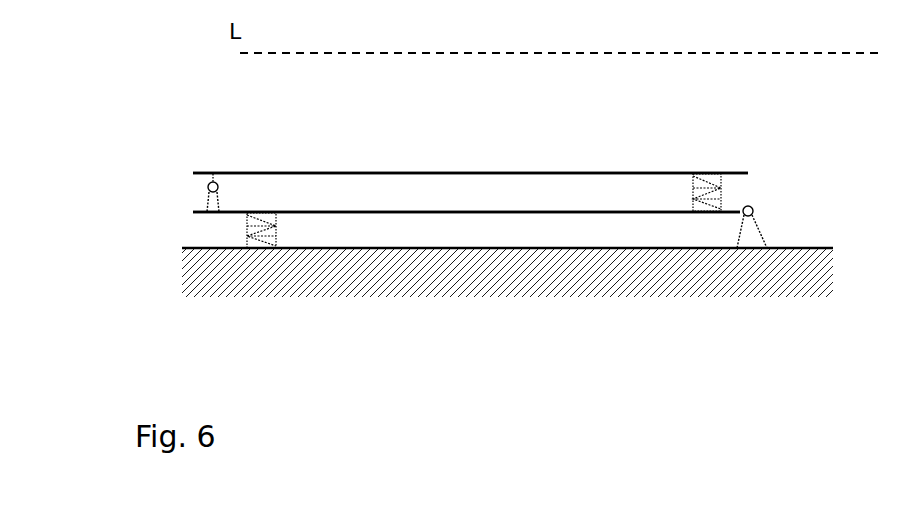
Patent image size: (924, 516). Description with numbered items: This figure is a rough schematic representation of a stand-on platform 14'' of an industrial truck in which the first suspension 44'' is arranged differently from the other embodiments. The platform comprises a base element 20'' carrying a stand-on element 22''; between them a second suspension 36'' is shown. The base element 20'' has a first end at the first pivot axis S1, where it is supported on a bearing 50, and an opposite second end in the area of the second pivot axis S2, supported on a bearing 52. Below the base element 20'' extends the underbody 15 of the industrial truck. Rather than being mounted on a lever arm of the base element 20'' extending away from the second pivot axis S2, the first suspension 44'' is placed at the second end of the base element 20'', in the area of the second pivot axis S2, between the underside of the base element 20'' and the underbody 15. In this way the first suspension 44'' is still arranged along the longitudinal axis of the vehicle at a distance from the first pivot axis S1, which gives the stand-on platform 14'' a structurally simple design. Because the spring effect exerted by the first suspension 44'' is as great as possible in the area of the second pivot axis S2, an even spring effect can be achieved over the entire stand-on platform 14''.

The stand-on platform 14'' is at (443, 140).
The stand-on element 22'' is at (470, 130).
The base element 20'' is at (466, 289).
The underbody 15 is at (512, 280).
The first suspension 44'' is at (184, 255).
The second suspension 36'' is at (685, 141).
The second pivot axis S2 is at (207, 187).
The bearing 52 is at (205, 203).
The first pivot axis S1 is at (752, 208).
The bearing 50 is at (752, 237).